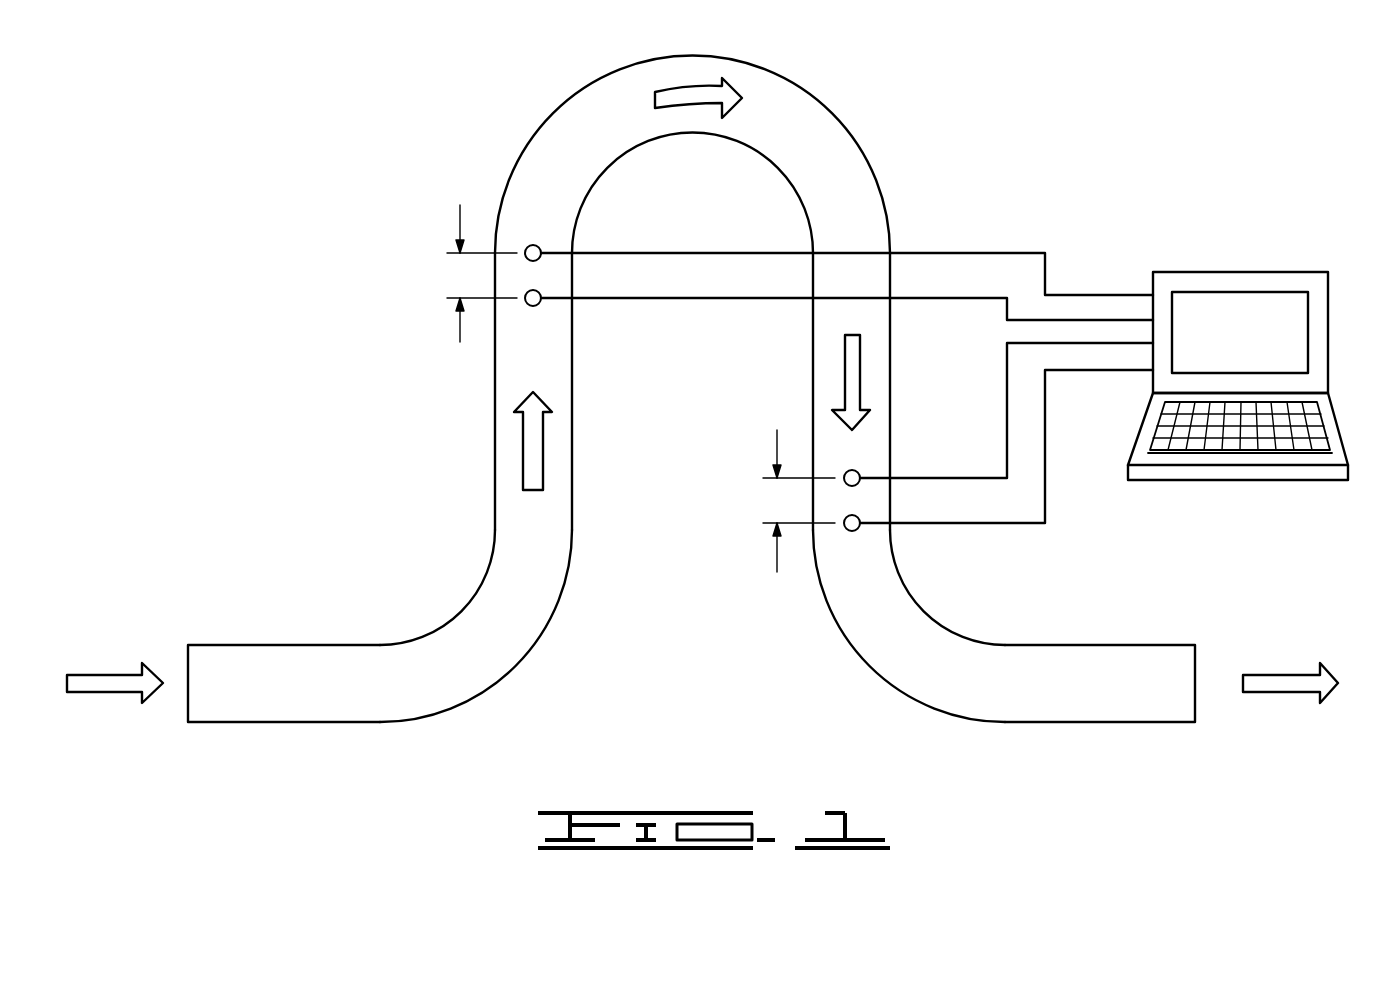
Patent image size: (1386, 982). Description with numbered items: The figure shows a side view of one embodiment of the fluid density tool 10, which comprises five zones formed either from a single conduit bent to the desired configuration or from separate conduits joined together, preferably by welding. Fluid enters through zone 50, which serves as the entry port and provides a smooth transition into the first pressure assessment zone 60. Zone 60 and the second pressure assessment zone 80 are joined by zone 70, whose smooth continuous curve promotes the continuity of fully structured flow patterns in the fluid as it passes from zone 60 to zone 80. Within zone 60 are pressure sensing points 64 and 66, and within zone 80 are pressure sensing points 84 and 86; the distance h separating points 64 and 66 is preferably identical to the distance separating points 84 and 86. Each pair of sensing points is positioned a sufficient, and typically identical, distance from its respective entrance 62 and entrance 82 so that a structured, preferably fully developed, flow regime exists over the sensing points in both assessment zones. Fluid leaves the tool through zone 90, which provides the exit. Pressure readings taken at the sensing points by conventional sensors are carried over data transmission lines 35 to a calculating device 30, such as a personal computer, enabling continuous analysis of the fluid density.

The fluid density tool 10 is at (893, 78).
The calculating device 30 is at (1300, 272).
The data transmission lines 35 is at (680, 252).
The zone 50 is at (295, 682).
The pressure assessment zone 60 is at (507, 389).
The entrance 62 is at (488, 618).
The pressure sensing point 64 is at (540, 304).
The pressure sensing point 66 is at (541, 247).
The zone 70 is at (593, 132).
The pressure assessment zone 80 is at (832, 369).
The entrance 82 is at (855, 215).
The pressure sensing point 84 is at (857, 471).
The pressure sensing point 86 is at (857, 530).
The zone 90 is at (1098, 683).